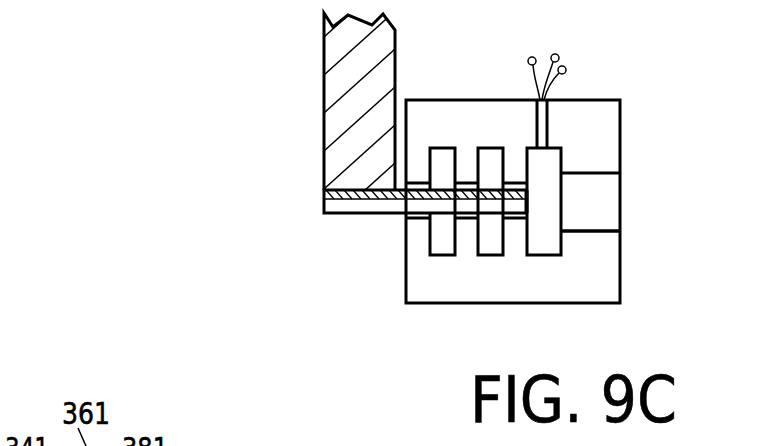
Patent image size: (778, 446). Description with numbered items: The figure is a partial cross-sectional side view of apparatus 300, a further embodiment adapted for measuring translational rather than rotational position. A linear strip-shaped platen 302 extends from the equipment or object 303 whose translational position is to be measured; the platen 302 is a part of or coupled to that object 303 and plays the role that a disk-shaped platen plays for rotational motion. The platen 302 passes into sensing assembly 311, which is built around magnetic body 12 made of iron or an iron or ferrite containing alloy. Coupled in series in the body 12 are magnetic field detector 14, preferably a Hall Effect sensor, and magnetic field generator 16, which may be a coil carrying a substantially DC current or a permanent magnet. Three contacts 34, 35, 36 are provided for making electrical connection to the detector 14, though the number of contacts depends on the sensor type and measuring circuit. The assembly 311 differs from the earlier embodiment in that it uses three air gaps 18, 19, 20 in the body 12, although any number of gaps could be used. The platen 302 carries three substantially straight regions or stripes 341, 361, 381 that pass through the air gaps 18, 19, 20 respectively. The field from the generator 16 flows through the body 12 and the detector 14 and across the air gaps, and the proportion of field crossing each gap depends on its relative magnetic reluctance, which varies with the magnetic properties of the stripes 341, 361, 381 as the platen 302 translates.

The apparatus 300 is at (143, 156).
The equipment or object 303 is at (333, 122).
The linear strip-shaped platen 302 is at (326, 203).
The straight region or stripe 341 is at (407, 203).
The sensing assembly 311 is at (488, 303).
The air gap 18 is at (417, 183).
The air gap 19 is at (466, 183).
The air gap 20 is at (514, 183).
The magnetic field detector 14 is at (542, 121).
The contact 34 is at (533, 57).
The contact 35 is at (558, 55).
The contact 36 is at (566, 71).
The magnetic field generator 16 is at (608, 213).
The magnetic body 12 is at (609, 281).
The straight region or stripe 361 is at (465, 198).
The straight region or stripe 381 is at (508, 200).